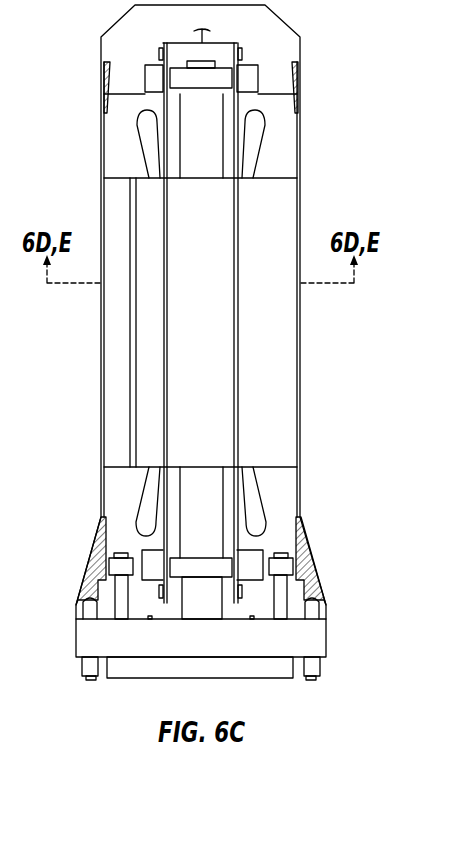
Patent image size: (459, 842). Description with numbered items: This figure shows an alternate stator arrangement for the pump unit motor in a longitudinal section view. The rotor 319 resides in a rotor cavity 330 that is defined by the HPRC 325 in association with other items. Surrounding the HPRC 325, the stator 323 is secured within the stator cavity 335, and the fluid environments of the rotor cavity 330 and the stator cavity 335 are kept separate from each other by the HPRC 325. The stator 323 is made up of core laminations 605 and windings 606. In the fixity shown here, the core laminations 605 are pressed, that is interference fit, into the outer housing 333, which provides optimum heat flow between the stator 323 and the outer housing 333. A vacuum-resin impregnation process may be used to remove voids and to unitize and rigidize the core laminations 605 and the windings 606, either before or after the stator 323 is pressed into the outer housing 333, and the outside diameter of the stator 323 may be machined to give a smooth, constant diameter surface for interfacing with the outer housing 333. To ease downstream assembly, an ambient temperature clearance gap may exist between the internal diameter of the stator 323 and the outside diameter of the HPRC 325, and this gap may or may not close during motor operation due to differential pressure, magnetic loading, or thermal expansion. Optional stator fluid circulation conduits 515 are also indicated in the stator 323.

The HPRC 325 is at (168, 73).
The rotor cavity 330 is at (172, 119).
The stator windings 606 is at (150, 148).
The stator cavity 335 is at (118, 167).
The outer housing 333 is at (101, 200).
The rotor 319 is at (183, 370).
The stator 323 is at (150, 388).
The core laminations 605 is at (148, 420).
The stator fluid circulation conduits 515 is at (133, 447).